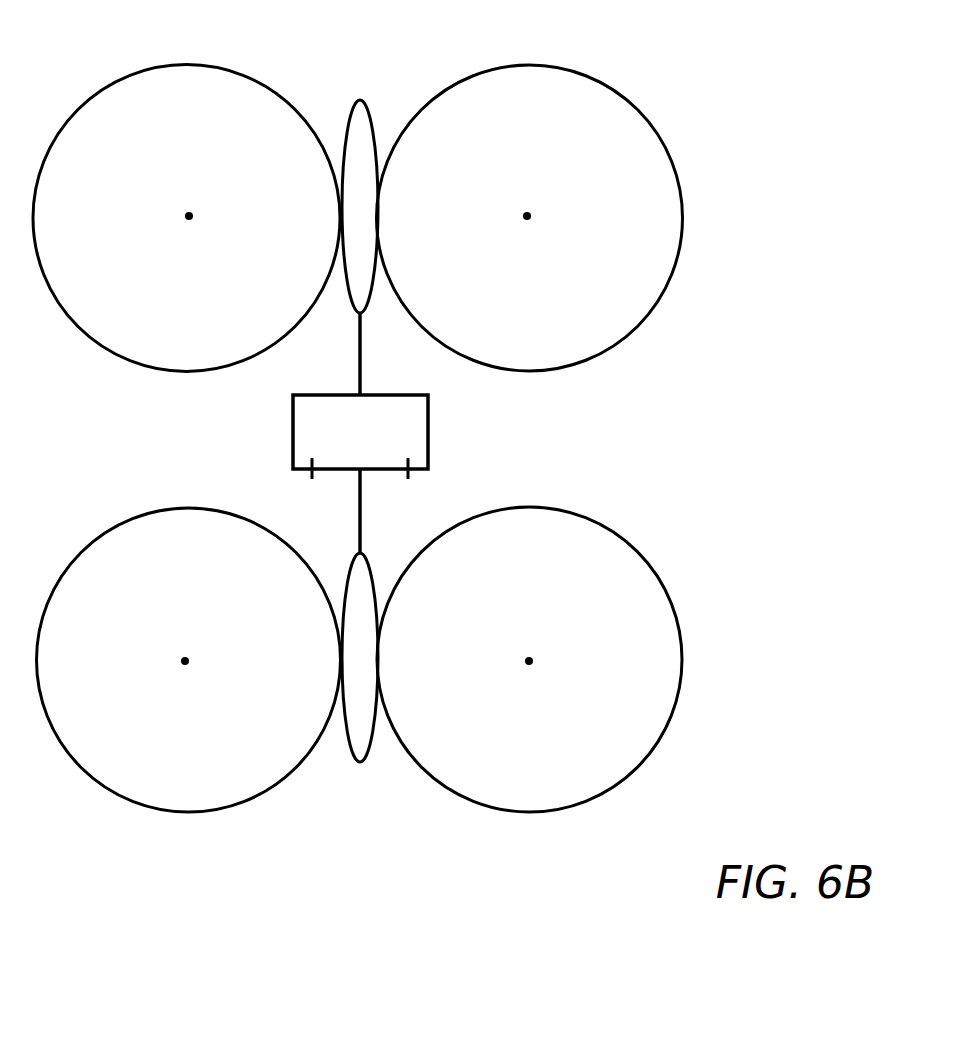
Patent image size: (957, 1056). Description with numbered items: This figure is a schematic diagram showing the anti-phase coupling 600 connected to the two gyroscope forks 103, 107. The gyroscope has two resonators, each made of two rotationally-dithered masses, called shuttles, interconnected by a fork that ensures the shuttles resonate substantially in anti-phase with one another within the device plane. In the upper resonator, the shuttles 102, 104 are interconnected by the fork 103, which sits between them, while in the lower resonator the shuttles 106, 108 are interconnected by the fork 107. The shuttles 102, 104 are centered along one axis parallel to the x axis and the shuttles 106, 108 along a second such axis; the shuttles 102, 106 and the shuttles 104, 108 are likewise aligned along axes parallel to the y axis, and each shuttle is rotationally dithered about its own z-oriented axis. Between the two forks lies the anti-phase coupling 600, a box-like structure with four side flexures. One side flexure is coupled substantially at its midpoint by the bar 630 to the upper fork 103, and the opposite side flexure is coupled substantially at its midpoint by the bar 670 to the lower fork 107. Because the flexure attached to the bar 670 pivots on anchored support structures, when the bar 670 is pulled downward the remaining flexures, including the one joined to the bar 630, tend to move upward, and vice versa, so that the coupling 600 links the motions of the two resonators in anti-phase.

The shuttle 102 is at (166, 288).
The shuttle 104 is at (510, 288).
The shuttle 106 is at (163, 730).
The shuttle 108 is at (510, 730).
The fork 103 is at (358, 92).
The fork 107 is at (356, 770).
The bar 630 is at (337, 354).
The bar 670 is at (384, 511).
The anti-phase coupling 600 is at (443, 460).